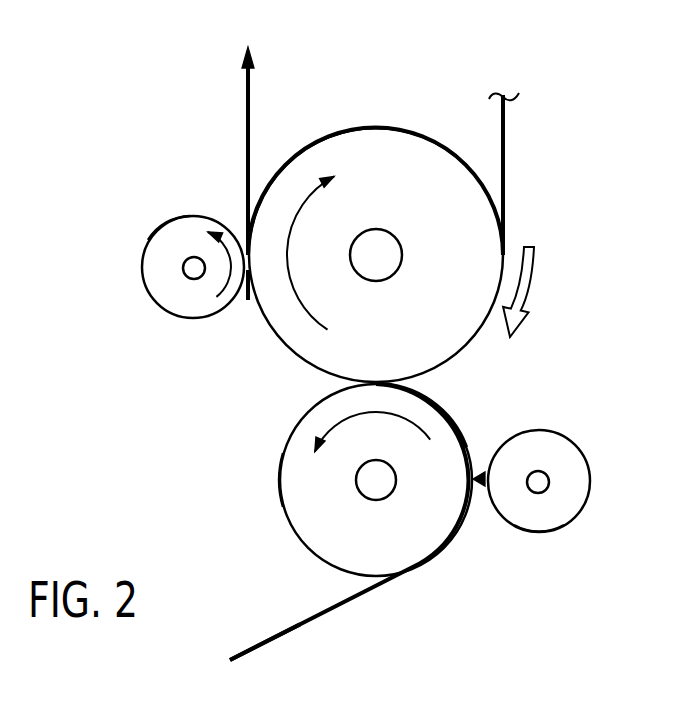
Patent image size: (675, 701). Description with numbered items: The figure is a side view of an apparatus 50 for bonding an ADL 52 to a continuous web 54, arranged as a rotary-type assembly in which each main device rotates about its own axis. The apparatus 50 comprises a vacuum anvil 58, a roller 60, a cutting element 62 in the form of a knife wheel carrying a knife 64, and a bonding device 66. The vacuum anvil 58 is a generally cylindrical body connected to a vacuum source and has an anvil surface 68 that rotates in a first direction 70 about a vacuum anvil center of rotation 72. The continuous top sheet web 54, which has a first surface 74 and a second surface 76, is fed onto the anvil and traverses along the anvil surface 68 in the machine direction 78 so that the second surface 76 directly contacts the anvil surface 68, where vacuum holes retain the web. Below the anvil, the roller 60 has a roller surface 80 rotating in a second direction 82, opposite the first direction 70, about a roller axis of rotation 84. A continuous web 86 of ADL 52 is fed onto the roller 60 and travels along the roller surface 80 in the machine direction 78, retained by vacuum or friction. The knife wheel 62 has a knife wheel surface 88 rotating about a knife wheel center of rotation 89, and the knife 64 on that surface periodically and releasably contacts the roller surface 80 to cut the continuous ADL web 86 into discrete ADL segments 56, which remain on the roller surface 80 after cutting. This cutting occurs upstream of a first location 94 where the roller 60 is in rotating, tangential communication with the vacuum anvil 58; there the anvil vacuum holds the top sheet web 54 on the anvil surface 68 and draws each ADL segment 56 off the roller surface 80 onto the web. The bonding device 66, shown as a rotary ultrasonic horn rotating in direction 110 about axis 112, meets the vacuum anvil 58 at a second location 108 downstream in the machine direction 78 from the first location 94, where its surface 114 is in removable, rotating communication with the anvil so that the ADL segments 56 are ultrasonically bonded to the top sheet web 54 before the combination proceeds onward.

The apparatus 50 is at (560, 170).
The ADL 52 is at (379, 617).
The web 54 is at (504, 134).
The ADL segments 56 is at (448, 416).
The vacuum anvil 58 is at (389, 207).
The roller 60 is at (387, 546).
The cutting element 62 is at (549, 523).
The knife 64 is at (484, 485).
The bonding device 66 is at (179, 279).
The anvil surface 68 is at (352, 128).
The first direction 70 is at (307, 199).
The vacuum anvil center of rotation 72 is at (381, 257).
The first surface 74 is at (524, 212).
The second surface 76 is at (484, 169).
The machine direction 78 is at (531, 285).
The roller surface 80 is at (281, 484).
The second direction 82 is at (313, 445).
The roller axis of rotation 84 is at (376, 484).
The continuous web of ADL 86 is at (280, 638).
The knife wheel surface 88 is at (535, 532).
The knife wheel center of rotation 89 is at (538, 470).
The first location 94 is at (376, 383).
The second location 108 is at (246, 306).
The direction 110 is at (247, 252).
The axis 112 is at (193, 274).
The surface 114 is at (170, 224).